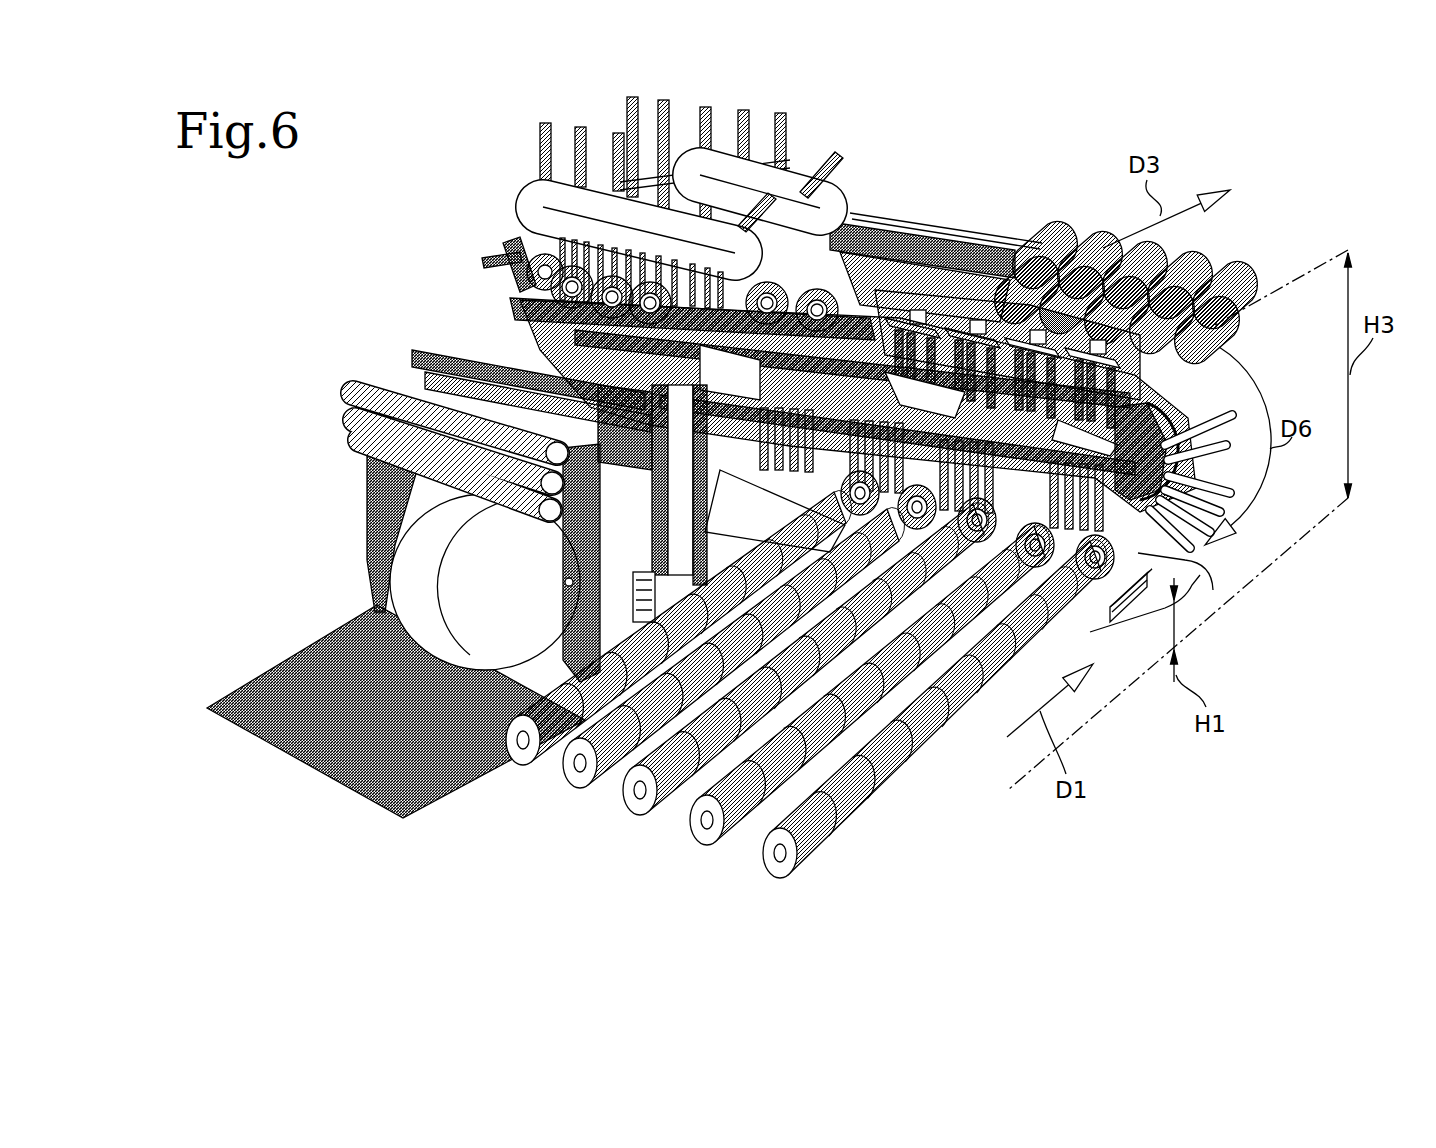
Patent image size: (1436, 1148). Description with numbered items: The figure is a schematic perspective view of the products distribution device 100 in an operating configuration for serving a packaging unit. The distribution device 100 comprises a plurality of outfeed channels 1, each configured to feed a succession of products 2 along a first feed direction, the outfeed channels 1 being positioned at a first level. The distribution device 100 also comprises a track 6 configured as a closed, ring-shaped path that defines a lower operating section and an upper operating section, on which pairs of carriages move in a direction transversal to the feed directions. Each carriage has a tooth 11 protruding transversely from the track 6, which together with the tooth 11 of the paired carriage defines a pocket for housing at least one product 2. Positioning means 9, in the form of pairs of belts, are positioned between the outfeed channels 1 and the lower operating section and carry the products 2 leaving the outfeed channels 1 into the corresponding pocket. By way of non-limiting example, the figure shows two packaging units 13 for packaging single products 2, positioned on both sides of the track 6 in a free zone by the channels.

The outfeed channels 1 is at (968, 770).
The products 2 is at (850, 808).
The track 6 is at (1213, 590).
The positioning means 9 is at (1139, 641).
The tooth 11 is at (1215, 362).
The packaging unit 13 is at (478, 342).
The distribution device 100 is at (1250, 338).